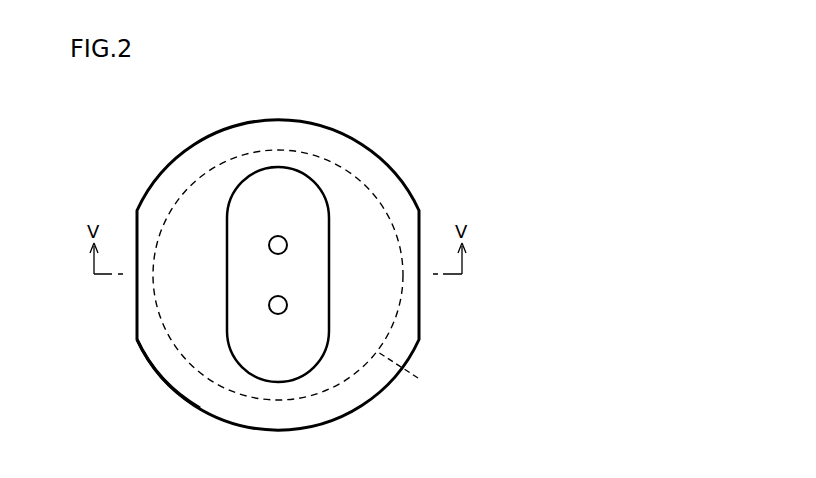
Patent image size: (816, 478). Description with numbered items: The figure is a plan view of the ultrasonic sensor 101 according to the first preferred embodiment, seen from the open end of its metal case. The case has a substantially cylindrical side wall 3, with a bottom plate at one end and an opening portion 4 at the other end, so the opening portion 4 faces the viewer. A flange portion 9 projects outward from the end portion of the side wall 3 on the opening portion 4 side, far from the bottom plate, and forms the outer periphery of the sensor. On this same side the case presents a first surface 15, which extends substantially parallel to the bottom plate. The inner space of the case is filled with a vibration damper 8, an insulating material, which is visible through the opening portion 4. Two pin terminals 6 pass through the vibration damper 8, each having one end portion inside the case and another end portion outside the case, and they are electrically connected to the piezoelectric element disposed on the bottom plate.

The ultrasonic sensor 101 is at (364, 114).
The first surface 15 is at (362, 203).
The side wall 3 is at (405, 372).
The flange portion 9 is at (175, 370).
The opening portion 4 is at (323, 357).
The vibration damper 8 is at (254, 192).
The pin terminals 6 is at (267, 246).